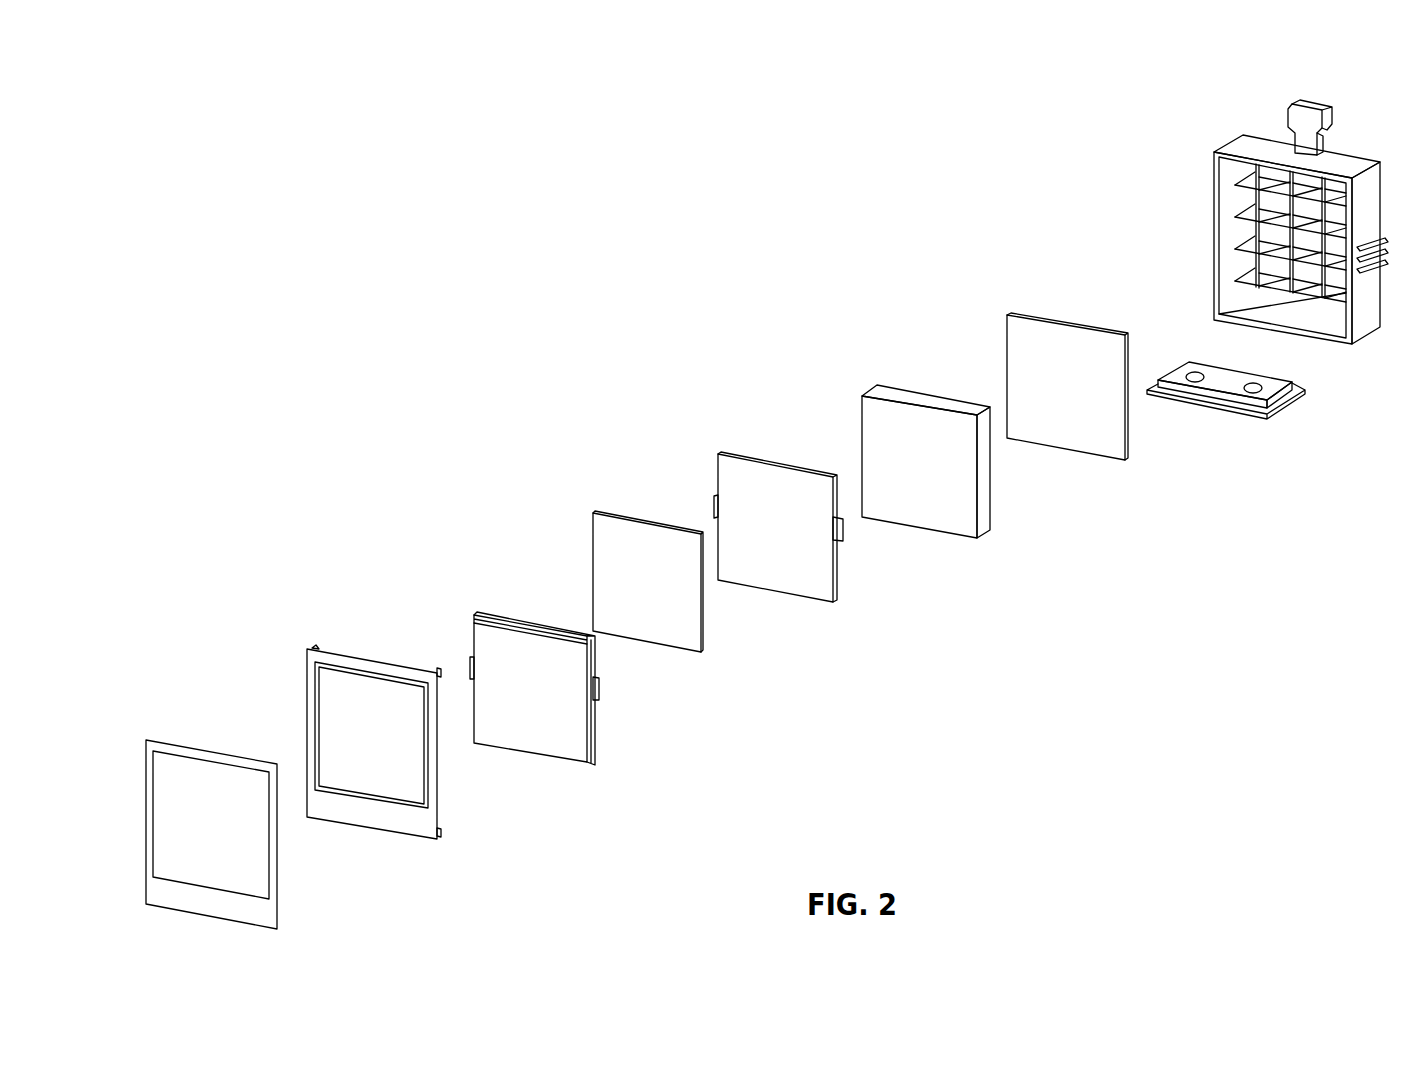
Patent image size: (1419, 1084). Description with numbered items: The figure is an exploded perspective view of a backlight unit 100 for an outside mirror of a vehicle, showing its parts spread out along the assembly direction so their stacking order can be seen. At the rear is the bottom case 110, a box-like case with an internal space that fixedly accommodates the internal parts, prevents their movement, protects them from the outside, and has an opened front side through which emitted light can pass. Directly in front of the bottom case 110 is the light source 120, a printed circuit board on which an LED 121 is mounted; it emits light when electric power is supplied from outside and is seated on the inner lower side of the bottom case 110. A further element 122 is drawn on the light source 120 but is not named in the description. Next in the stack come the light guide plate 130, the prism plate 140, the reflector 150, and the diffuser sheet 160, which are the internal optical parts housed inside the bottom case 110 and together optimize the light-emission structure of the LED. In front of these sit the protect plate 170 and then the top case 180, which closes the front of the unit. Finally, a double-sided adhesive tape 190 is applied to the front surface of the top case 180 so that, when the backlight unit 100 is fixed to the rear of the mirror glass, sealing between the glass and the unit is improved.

The backlight unit 100 is at (607, 257).
The bottom case 110 is at (1195, 140).
The light source 120 is at (1190, 344).
The LED 121 is at (1237, 390).
The base plate 122 is at (1273, 387).
The light guide plate 130 is at (928, 389).
The prism plate 140 is at (780, 453).
The reflector 150 is at (1078, 309).
The diffuser sheet 160 is at (640, 503).
The protect plate 170 is at (526, 604).
The top case 180 is at (378, 648).
The double-sided adhesive tape 190 is at (197, 728).